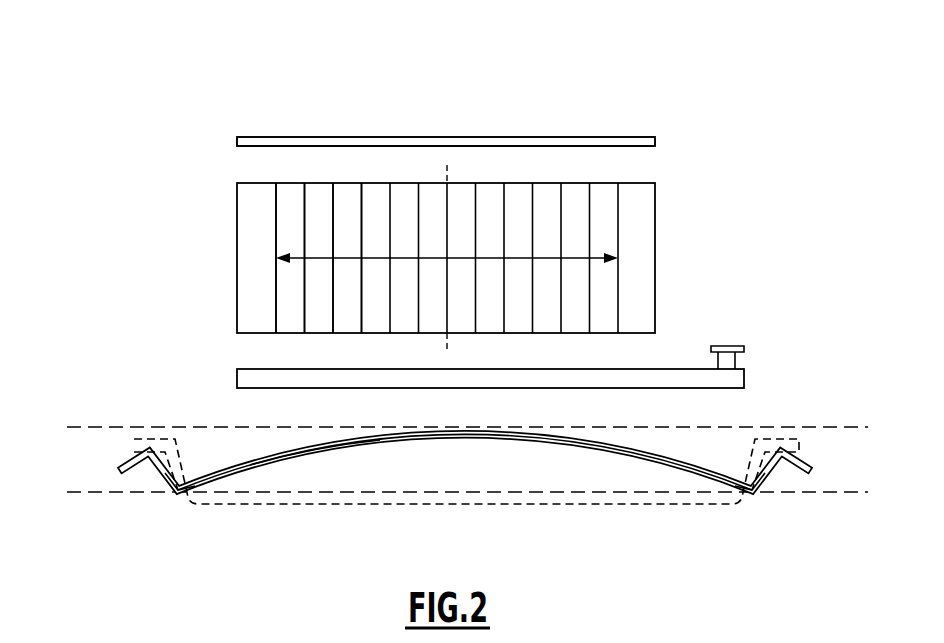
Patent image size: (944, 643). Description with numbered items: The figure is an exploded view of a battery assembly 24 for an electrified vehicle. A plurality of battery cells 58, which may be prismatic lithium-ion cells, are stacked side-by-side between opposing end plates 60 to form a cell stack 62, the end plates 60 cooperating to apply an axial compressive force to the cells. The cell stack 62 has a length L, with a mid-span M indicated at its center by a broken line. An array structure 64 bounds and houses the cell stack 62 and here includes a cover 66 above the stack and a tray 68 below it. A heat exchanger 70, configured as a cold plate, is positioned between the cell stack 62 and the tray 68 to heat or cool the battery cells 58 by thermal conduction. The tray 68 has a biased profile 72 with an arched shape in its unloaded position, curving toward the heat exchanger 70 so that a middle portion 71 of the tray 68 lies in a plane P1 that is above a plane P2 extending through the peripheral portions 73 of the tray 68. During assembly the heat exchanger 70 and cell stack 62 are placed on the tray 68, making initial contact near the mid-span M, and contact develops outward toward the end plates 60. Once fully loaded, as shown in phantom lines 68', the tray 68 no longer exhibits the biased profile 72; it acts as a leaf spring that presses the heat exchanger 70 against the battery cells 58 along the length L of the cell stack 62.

The battery assembly 24 is at (492, 96).
The battery cells 58 is at (343, 197).
The end plates 60 is at (255, 249).
The cell stack 62 is at (215, 219).
The array structure 64 is at (670, 138).
The cover 66 is at (566, 137).
The tray 68 is at (417, 457).
The tray in fully loaded position 68' is at (466, 495).
The heat exchanger 70 is at (744, 375).
The middle portion 71 is at (456, 432).
The biased profile 72 is at (313, 455).
The peripheral portions 73 is at (178, 494).
The length L is at (510, 257).
The mid-span M is at (448, 345).
The plane P1 is at (833, 428).
The plane P2 is at (833, 492).